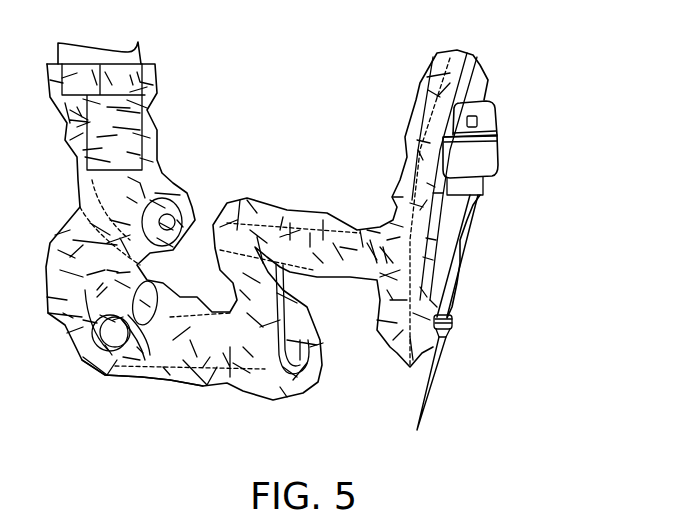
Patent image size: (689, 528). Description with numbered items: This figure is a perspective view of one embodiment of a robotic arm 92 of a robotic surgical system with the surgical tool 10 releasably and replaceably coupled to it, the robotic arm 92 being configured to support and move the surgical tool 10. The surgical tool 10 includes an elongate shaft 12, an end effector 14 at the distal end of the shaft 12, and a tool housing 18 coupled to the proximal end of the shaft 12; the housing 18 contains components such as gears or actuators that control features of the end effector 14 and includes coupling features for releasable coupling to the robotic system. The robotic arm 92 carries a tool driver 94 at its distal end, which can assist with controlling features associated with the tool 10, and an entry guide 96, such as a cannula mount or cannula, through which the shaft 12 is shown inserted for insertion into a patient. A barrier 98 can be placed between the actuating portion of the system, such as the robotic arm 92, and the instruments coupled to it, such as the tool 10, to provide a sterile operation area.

The surgical tool 10 is at (480, 290).
The elongate shaft 12 is at (472, 233).
The end effector 14 is at (441, 423).
The tool housing 18 is at (494, 120).
The robotic arm 92 is at (273, 80).
The tool driver 94 is at (485, 161).
The entry guide 96 is at (446, 335).
The barrier 98 is at (150, 380).